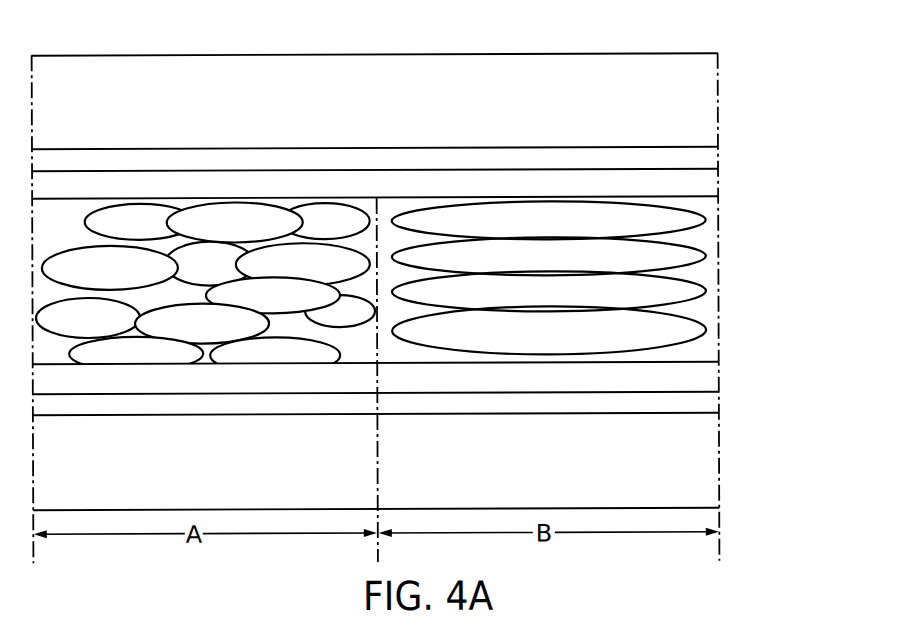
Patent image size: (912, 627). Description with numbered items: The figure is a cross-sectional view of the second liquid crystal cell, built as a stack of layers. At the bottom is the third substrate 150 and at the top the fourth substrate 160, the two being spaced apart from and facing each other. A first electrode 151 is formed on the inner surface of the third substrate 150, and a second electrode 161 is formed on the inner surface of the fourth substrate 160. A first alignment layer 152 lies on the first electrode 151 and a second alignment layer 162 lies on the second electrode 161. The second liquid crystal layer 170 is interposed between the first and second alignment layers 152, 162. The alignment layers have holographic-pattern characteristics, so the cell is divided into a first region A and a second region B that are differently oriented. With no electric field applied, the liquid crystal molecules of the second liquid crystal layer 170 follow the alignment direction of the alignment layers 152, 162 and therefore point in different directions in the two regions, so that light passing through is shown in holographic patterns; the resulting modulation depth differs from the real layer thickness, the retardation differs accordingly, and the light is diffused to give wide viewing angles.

The third substrate 150 is at (333, 483).
The first electrode 151 is at (708, 408).
The first alignment layer 152 is at (708, 376).
The fourth substrate 160 is at (392, 133).
The second electrode 161 is at (718, 156).
The second alignment layer 162 is at (718, 187).
The second liquid crystal layer 170 is at (712, 277).